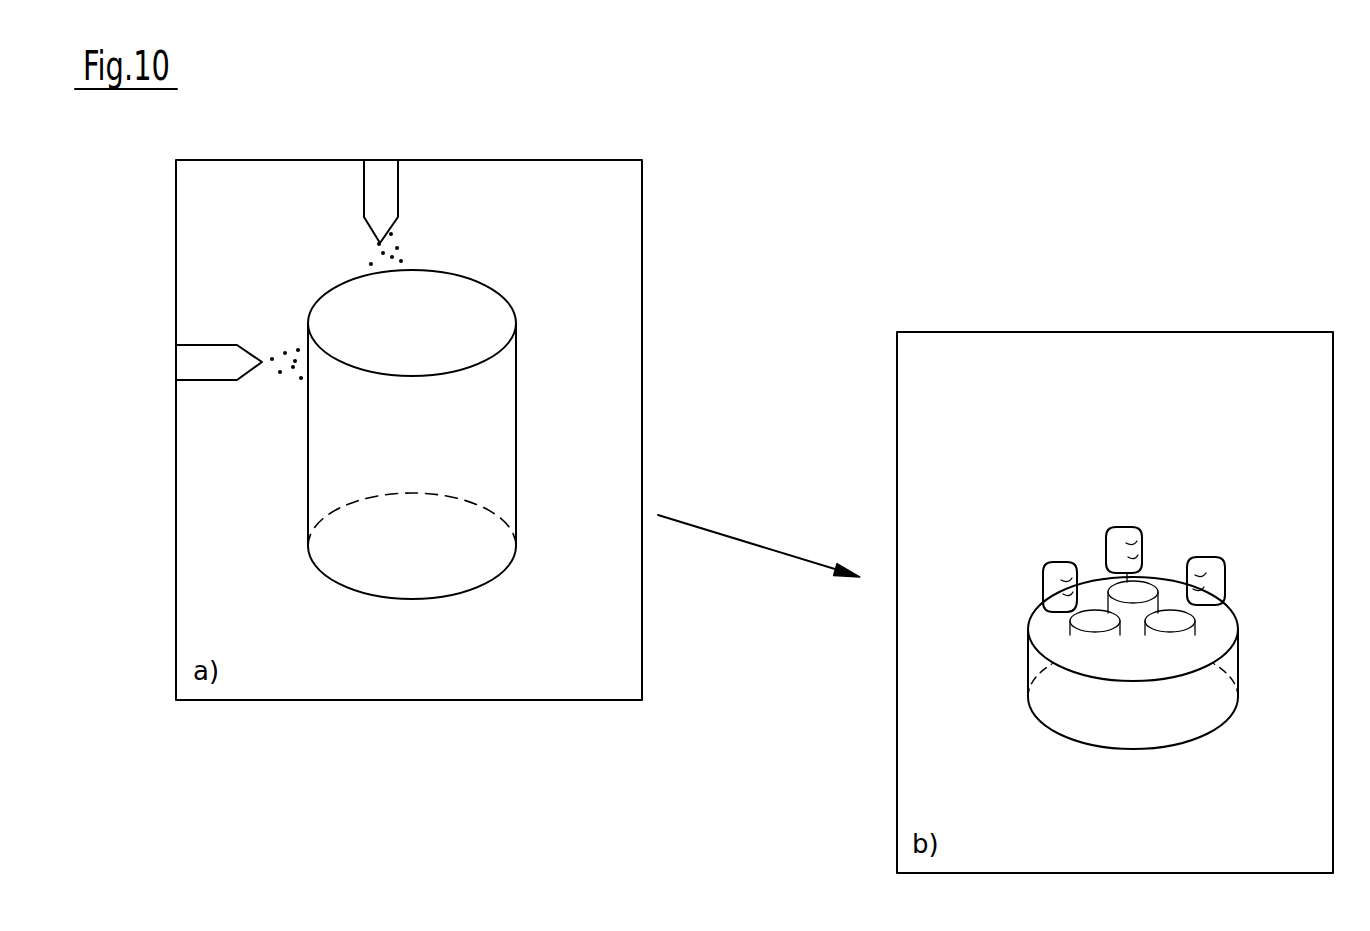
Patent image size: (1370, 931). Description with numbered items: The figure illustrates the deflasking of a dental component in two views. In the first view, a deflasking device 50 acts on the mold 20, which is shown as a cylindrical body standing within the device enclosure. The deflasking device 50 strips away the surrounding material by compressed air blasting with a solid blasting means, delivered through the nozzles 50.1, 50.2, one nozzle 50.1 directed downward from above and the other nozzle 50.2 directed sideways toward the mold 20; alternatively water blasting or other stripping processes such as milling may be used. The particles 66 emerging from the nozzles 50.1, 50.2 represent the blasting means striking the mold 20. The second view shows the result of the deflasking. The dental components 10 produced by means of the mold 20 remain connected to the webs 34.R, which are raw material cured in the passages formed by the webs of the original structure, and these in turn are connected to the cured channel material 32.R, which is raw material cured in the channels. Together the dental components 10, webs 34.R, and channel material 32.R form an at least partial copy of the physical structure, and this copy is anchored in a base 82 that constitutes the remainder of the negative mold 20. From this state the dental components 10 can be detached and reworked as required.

The deflasking device 50 is at (603, 160).
The nozzle 50.1 is at (382, 160).
The nozzle 50.2 is at (177, 363).
The coating particles 66 is at (291, 369).
The mold 20 is at (517, 430).
The dental components 10 is at (1060, 563).
The webs 34.R is at (1072, 616).
The raw material cured in the channels 32.R is at (1172, 622).
The base 82 is at (1073, 698).